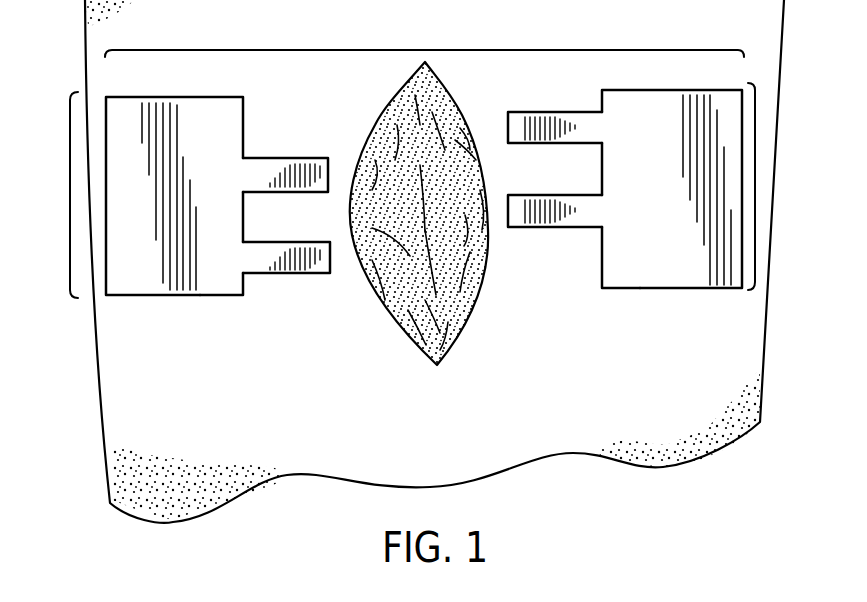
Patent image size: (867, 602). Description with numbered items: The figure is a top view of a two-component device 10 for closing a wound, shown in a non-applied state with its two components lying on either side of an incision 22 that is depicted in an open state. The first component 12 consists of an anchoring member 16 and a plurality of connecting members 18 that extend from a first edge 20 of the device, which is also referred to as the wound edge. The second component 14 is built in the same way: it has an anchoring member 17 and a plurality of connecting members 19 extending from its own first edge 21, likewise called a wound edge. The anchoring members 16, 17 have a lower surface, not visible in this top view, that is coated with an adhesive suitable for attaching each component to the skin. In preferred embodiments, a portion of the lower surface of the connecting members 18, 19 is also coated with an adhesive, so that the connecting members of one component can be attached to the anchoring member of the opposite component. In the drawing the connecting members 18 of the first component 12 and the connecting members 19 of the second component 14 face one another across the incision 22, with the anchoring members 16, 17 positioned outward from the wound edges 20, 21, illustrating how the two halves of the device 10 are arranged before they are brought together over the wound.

The two-component device 10 is at (412, 50).
The first component 12 is at (70, 193).
The second component 14 is at (755, 187).
The anchoring member 16 is at (153, 280).
The anchoring member 17 is at (683, 275).
The connecting members 18 is at (258, 163).
The connecting members 19 is at (517, 117).
The first edge 20 is at (250, 283).
The first edge 21 is at (600, 277).
The incision 22 is at (457, 337).